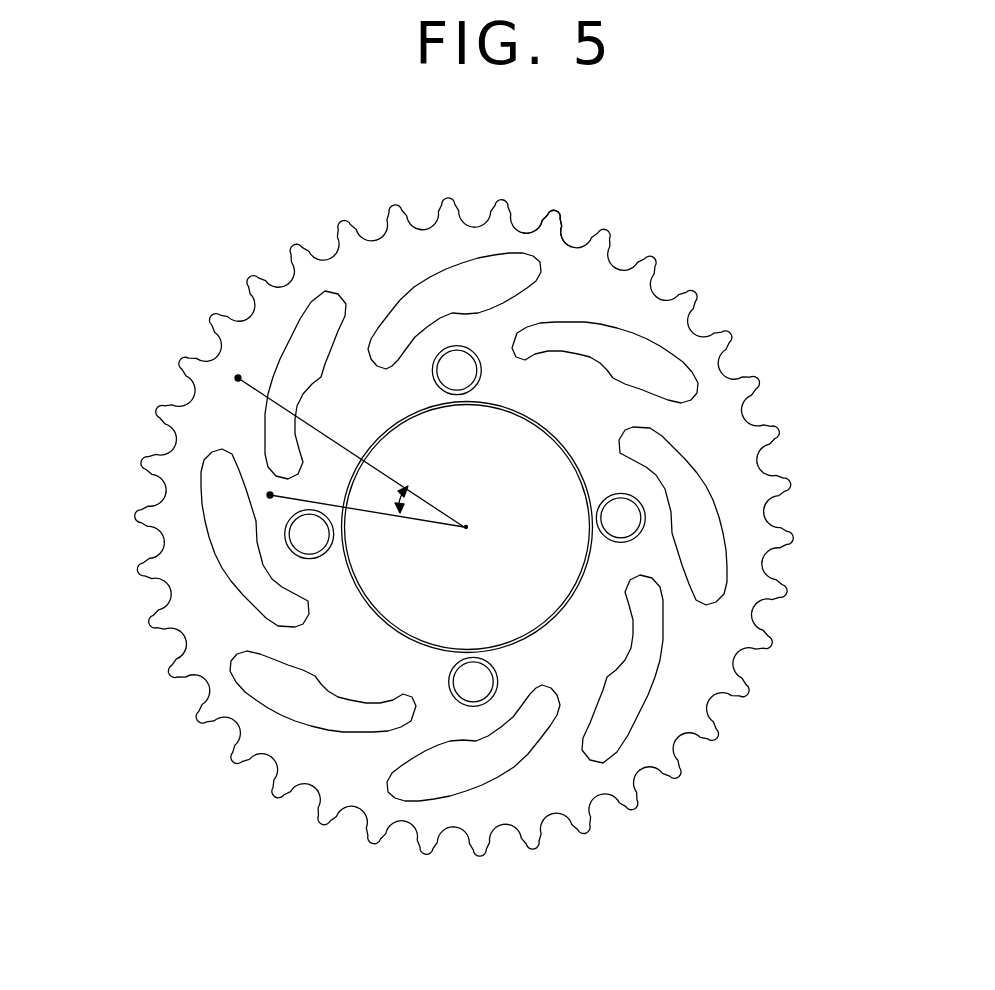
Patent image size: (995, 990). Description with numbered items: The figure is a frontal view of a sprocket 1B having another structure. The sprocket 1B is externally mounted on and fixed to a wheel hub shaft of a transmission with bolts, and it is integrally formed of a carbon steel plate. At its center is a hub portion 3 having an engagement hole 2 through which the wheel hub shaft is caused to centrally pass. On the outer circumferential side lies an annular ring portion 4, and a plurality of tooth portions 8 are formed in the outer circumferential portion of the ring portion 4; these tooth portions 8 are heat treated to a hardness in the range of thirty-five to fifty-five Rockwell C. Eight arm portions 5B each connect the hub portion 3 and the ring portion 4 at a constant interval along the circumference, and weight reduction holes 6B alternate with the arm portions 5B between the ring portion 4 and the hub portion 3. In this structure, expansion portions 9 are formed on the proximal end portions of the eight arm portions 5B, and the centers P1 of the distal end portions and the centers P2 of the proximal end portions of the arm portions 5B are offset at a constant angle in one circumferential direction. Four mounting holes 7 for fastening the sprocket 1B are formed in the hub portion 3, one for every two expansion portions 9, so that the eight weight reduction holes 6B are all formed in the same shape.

The sprocket 1B is at (725, 219).
The engagement hole 2 is at (527, 554).
The hub portion 3 is at (467, 527).
The annular ring portion 4 is at (740, 448).
The arm portions 5B is at (677, 587).
The weight reduction holes 6B is at (668, 372).
The mounting holes 7 is at (470, 680).
The tooth portions 8 is at (768, 633).
The expansion portions 9 is at (577, 367).
The centers of the distal end portions P1 is at (238, 378).
The centers of the proximal end portions P2 is at (270, 495).